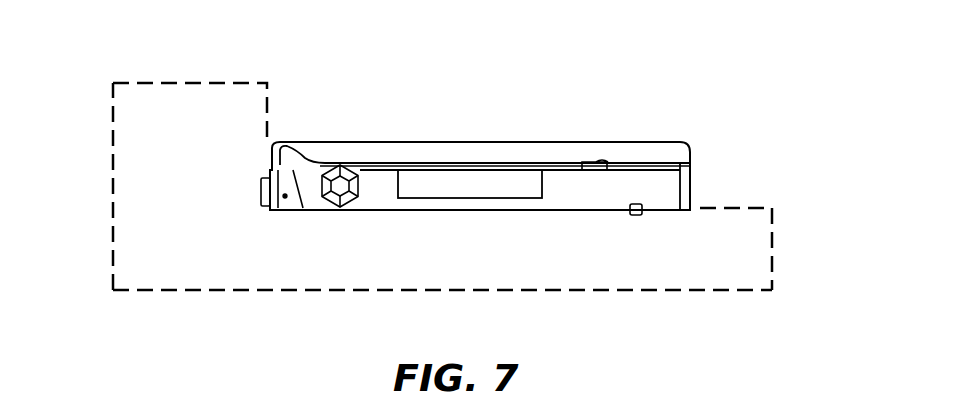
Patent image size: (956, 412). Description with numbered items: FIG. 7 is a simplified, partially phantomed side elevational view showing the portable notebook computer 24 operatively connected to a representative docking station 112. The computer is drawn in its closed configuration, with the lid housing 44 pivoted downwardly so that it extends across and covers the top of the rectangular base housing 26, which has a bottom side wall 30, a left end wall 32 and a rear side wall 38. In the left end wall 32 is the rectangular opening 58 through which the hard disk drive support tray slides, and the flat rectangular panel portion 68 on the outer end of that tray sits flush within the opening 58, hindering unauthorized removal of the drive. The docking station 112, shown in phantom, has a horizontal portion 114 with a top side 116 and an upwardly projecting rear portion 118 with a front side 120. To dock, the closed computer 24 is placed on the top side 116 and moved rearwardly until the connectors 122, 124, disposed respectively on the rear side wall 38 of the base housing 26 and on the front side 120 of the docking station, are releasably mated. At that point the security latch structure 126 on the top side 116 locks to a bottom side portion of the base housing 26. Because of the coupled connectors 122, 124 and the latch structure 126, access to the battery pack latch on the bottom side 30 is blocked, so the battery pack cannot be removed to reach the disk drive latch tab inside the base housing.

The portable notebook computer 24 is at (613, 114).
The lid housing 44 is at (692, 148).
The base housing 26 is at (700, 190).
The panel portion 68 is at (463, 182).
The opening 58 is at (533, 187).
The bottom side wall 30 is at (583, 210).
The left end wall 32 is at (656, 188).
The security latch structure 126 is at (640, 214).
The connector 122 is at (203, 154).
The connector 124 is at (268, 177).
The rear side wall 38 is at (277, 185).
The docking station 112 is at (188, 292).
The rear portion 118 is at (113, 216).
The front side 120 is at (267, 121).
The top side 116 is at (752, 207).
The horizontal portion 114 is at (774, 252).